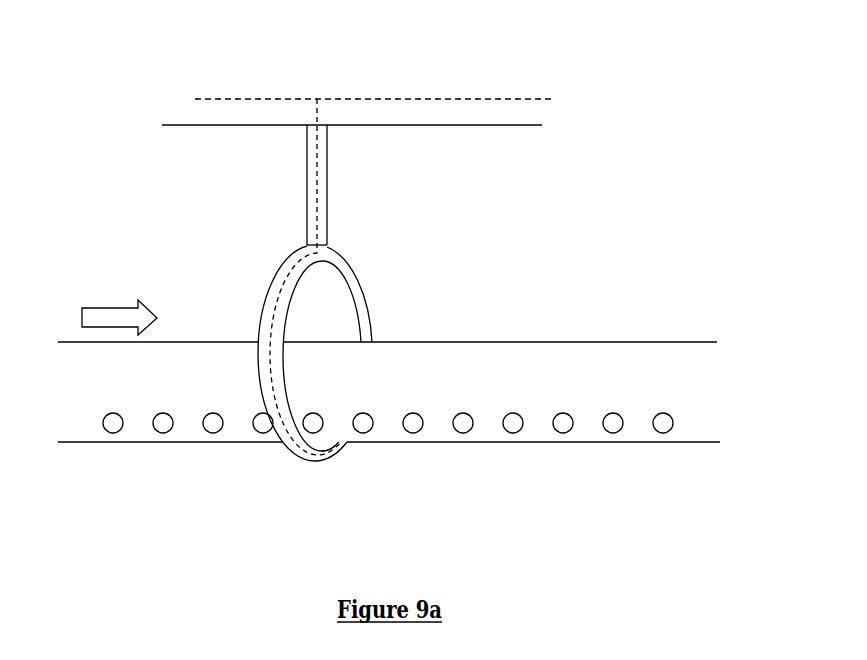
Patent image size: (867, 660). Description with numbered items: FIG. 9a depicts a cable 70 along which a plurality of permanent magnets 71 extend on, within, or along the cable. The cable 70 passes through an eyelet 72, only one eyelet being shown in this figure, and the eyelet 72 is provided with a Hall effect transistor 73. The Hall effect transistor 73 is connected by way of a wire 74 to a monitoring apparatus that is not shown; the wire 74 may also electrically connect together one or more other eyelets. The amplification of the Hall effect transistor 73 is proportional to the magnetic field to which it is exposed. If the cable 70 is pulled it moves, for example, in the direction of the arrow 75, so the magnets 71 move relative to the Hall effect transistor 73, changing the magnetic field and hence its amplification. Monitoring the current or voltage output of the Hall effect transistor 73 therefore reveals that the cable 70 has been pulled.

The cable 70 is at (673, 356).
The permanent magnets 71 is at (212, 426).
The eyelet 72 is at (352, 282).
The Hall effect transistor 73 is at (312, 452).
The wire 74 is at (413, 99).
The arrow 75 is at (98, 316).